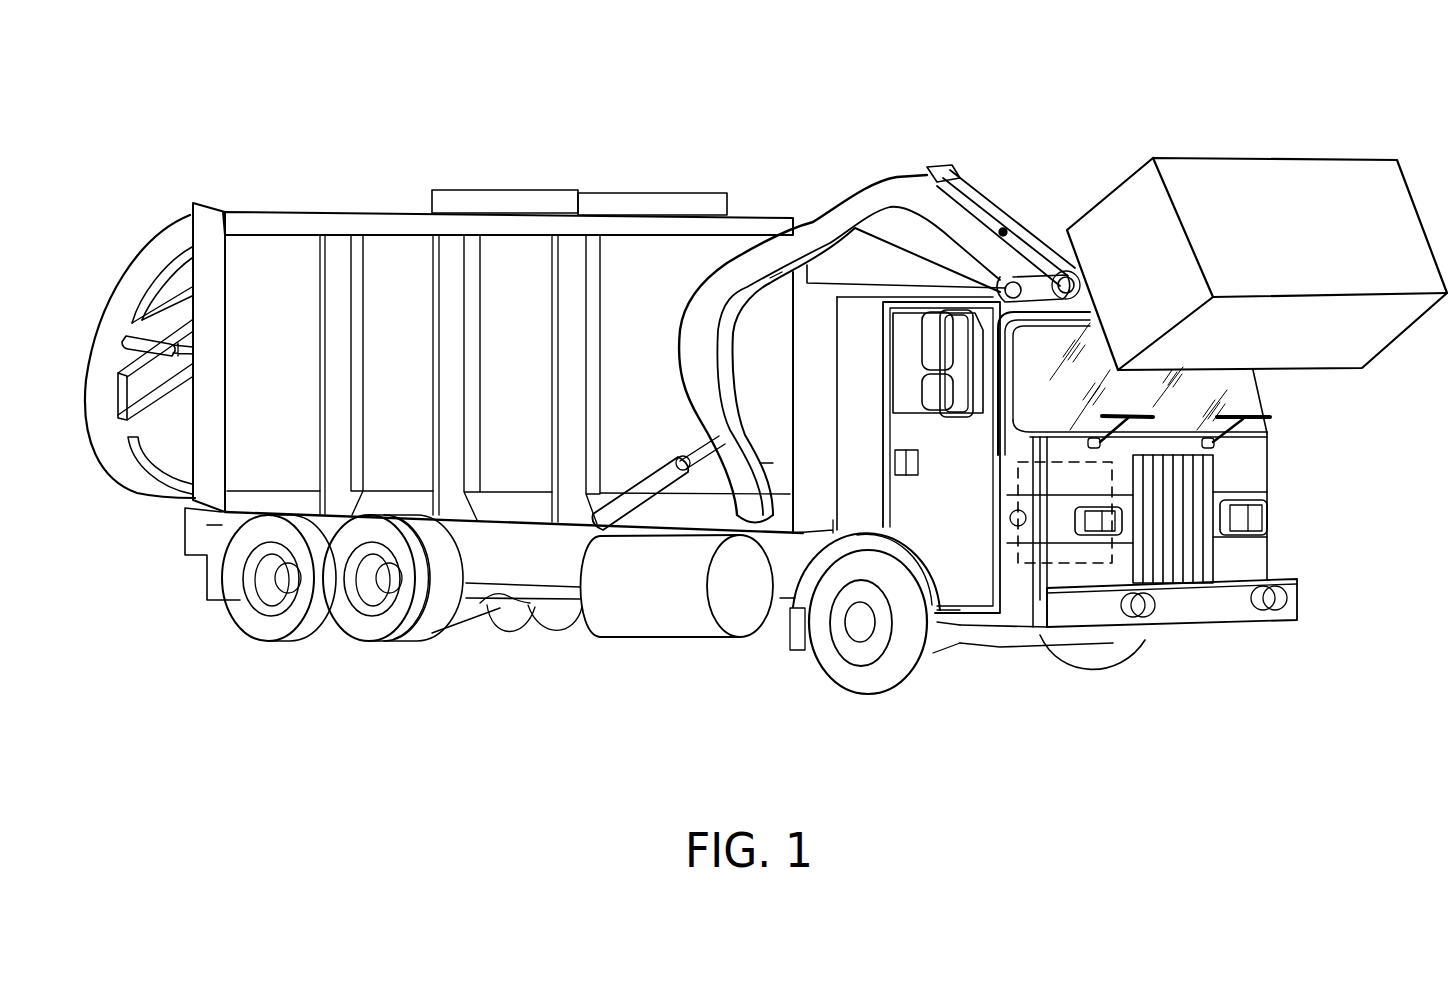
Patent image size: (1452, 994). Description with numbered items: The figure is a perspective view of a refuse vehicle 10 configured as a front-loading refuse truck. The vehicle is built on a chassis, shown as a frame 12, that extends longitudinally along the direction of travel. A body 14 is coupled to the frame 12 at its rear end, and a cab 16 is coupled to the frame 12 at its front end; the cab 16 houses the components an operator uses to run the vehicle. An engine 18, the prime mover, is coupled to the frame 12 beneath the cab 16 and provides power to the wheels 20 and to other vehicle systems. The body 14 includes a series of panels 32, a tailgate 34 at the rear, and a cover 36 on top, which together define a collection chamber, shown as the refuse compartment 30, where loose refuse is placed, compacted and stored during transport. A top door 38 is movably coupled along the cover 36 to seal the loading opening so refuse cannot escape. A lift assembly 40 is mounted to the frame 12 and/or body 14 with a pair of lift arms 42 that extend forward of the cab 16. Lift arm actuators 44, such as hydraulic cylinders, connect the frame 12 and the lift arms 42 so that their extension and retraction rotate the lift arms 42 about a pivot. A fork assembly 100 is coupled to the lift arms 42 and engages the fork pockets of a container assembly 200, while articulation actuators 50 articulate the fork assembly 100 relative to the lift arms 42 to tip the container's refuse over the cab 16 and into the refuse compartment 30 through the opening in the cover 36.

The refuse vehicle 10 is at (160, 119).
The frame 12 is at (532, 575).
The body 14 is at (412, 223).
The cab 16 is at (1017, 612).
The engine 18 is at (1057, 565).
The wheels 20 is at (898, 678).
The refuse compartment 30 is at (790, 188).
The panels 32 is at (273, 240).
The tailgate 34 is at (156, 248).
The cover 36 is at (352, 220).
The top door 38 is at (502, 190).
The lift assembly 40 is at (981, 125).
The lift arms 42 is at (873, 190).
The lift arm actuators 44 is at (650, 480).
The articulation actuators 50 is at (1004, 201).
The fork assembly 100 is at (1064, 272).
The container assembly 200 is at (1296, 180).